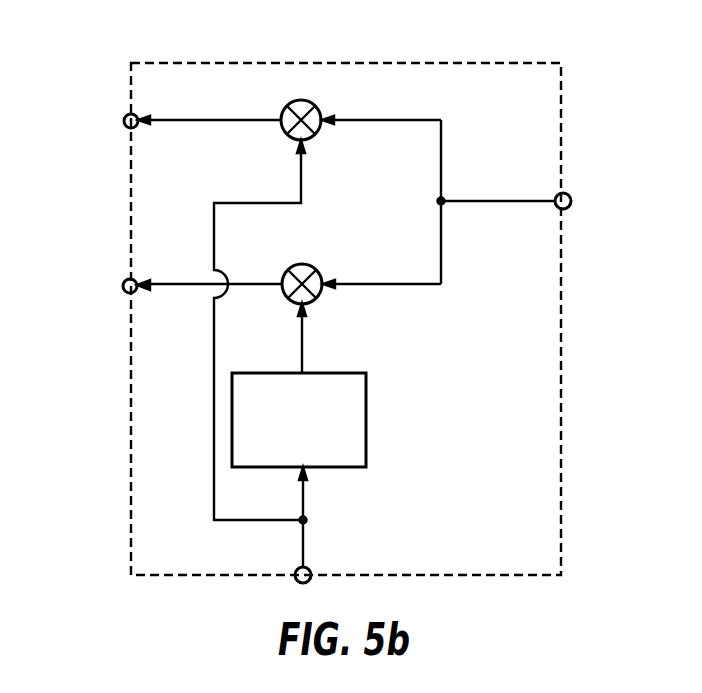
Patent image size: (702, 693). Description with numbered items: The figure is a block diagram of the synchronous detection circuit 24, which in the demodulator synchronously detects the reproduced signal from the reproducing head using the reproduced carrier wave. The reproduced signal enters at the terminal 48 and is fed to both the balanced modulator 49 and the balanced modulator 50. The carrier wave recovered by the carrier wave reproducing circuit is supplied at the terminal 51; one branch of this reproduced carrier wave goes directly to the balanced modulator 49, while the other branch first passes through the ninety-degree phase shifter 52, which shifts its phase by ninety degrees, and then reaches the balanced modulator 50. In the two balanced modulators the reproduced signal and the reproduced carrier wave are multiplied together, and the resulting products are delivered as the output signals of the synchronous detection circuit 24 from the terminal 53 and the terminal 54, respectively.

The synchronous detection circuit 24 is at (144, 62).
The terminal 48 is at (571, 201).
The balanced modulator 49 is at (305, 100).
The balanced modulator 50 is at (306, 264).
The terminal 51 is at (304, 583).
The 90° shifter 52 is at (366, 428).
The terminal 53 is at (124, 122).
The terminal 54 is at (123, 287).